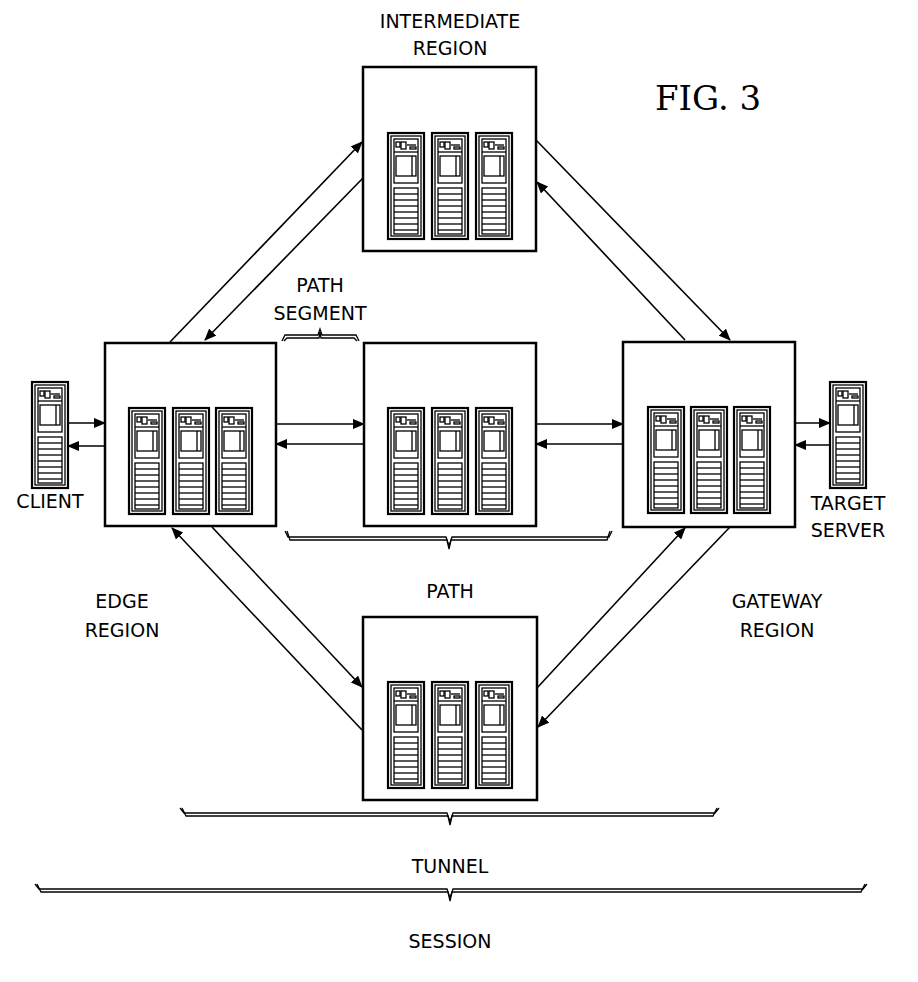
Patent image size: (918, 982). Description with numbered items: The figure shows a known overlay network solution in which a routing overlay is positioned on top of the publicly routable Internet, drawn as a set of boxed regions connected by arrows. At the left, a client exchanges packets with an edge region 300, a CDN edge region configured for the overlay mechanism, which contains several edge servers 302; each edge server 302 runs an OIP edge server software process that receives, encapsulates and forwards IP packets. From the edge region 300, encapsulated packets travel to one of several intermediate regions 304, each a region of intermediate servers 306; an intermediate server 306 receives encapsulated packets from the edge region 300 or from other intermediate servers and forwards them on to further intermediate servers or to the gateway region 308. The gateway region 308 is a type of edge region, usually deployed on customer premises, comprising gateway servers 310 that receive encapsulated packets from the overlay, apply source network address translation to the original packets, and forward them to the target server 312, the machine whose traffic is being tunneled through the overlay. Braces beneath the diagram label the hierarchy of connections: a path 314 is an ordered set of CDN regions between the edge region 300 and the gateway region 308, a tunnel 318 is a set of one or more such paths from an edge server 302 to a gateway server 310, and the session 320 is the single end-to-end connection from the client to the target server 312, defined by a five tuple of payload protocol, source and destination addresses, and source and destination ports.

The edge region 300 is at (143, 528).
The edge server 302 is at (147, 408).
The intermediate region 304 is at (361, 101).
The intermediate server 306 is at (406, 133).
The gateway region 308 is at (756, 529).
The gateway server 310 is at (665, 407).
The target server 312 is at (850, 382).
The path 314 is at (448, 554).
The tunnel 318 is at (449, 830).
The session 320 is at (451, 905).